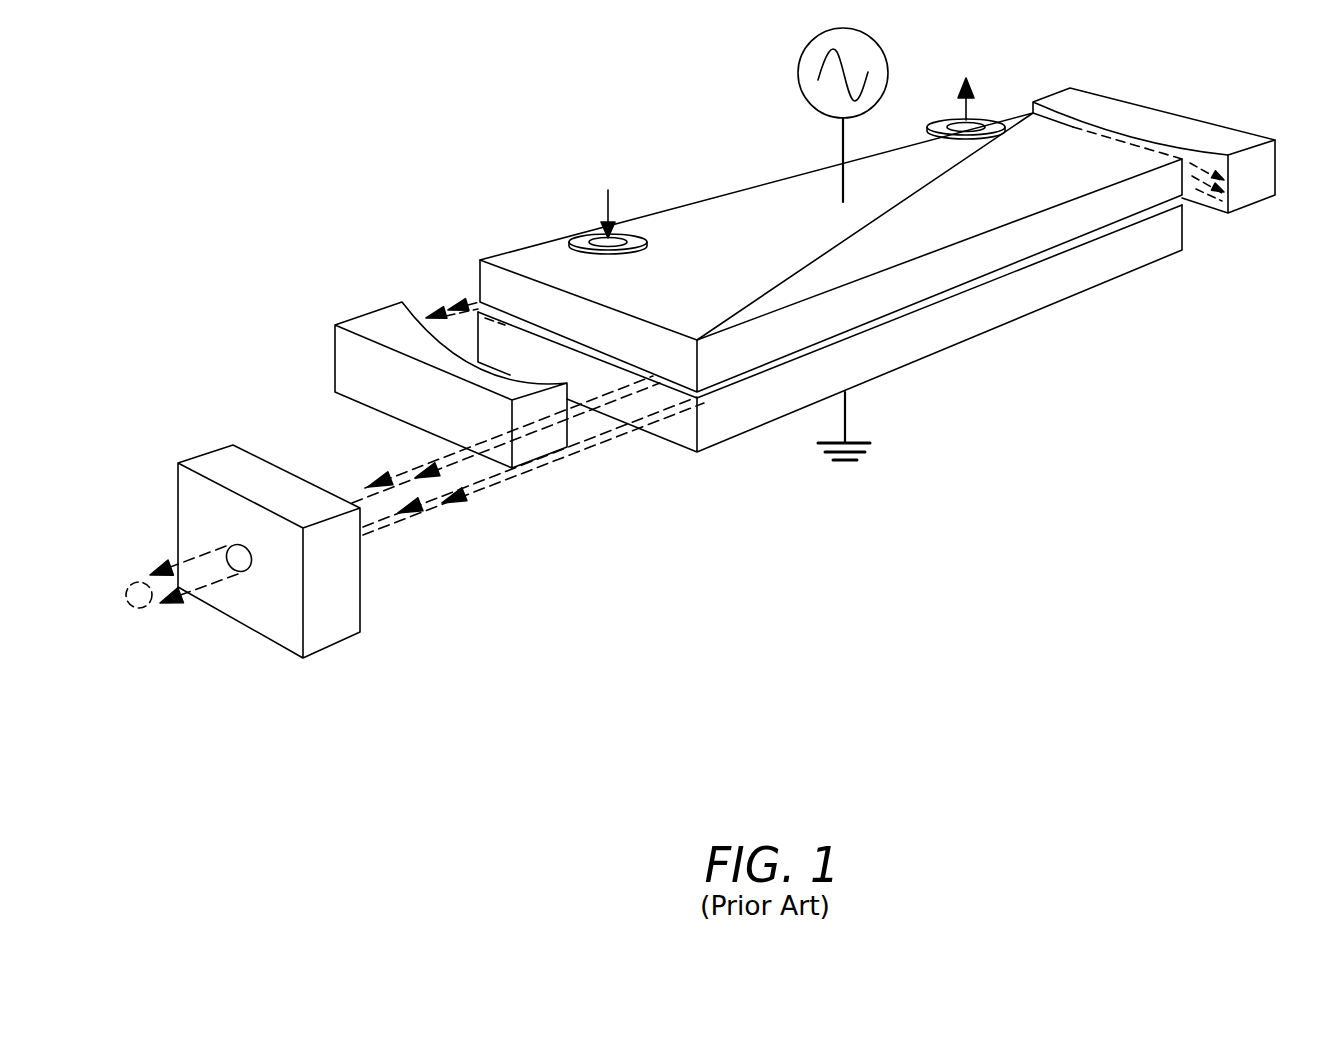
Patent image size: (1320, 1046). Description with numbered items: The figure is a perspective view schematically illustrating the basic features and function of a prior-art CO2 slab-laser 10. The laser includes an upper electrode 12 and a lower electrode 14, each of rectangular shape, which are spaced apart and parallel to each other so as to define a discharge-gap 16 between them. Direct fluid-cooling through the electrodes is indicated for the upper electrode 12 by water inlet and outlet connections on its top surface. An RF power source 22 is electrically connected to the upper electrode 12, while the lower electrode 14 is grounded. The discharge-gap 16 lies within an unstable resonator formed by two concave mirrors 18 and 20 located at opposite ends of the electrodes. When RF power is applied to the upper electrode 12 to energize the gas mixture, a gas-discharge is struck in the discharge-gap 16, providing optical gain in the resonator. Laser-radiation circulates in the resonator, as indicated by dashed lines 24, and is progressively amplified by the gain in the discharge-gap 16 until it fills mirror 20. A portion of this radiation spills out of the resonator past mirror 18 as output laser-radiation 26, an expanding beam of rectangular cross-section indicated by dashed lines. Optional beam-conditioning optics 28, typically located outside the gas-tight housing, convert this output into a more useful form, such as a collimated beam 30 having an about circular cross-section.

The slab-laser 10 is at (1068, 683).
The upper electrode 12 is at (768, 187).
The lower electrode 14 is at (955, 333).
The discharge-gap 16 is at (1033, 262).
The concave mirror 18 is at (405, 305).
The concave mirror 20 is at (1226, 197).
The RF power source 22 is at (802, 54).
The dashed lines indicating circulating laser-radiation 24 is at (446, 303).
The output laser-radiation 26 is at (393, 470).
The beam-conditioning optics 28 is at (383, 615).
The collimated beam 30 is at (157, 607).